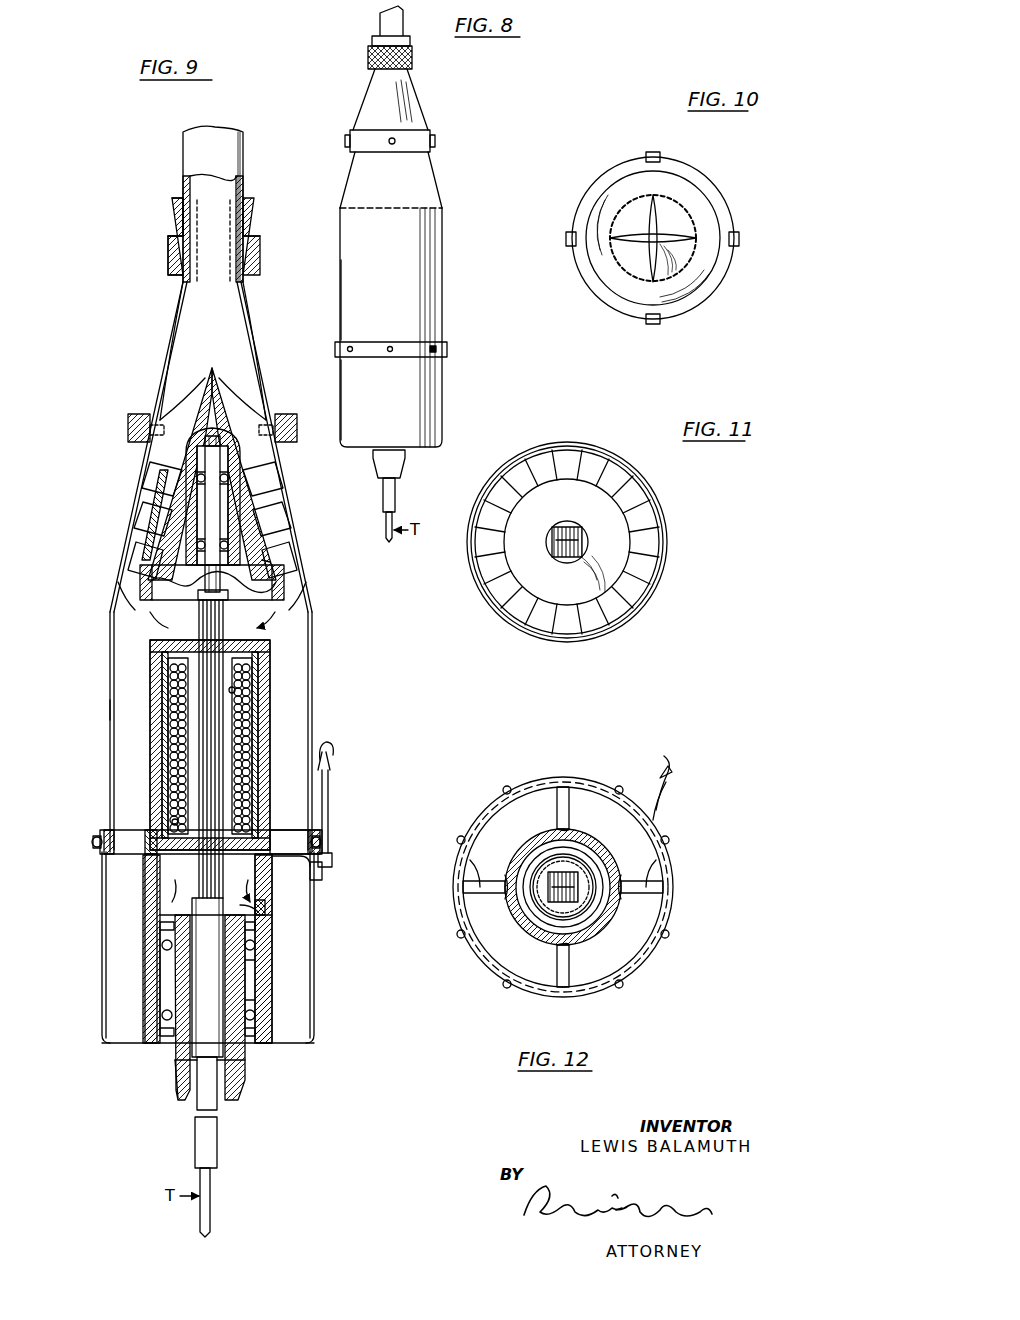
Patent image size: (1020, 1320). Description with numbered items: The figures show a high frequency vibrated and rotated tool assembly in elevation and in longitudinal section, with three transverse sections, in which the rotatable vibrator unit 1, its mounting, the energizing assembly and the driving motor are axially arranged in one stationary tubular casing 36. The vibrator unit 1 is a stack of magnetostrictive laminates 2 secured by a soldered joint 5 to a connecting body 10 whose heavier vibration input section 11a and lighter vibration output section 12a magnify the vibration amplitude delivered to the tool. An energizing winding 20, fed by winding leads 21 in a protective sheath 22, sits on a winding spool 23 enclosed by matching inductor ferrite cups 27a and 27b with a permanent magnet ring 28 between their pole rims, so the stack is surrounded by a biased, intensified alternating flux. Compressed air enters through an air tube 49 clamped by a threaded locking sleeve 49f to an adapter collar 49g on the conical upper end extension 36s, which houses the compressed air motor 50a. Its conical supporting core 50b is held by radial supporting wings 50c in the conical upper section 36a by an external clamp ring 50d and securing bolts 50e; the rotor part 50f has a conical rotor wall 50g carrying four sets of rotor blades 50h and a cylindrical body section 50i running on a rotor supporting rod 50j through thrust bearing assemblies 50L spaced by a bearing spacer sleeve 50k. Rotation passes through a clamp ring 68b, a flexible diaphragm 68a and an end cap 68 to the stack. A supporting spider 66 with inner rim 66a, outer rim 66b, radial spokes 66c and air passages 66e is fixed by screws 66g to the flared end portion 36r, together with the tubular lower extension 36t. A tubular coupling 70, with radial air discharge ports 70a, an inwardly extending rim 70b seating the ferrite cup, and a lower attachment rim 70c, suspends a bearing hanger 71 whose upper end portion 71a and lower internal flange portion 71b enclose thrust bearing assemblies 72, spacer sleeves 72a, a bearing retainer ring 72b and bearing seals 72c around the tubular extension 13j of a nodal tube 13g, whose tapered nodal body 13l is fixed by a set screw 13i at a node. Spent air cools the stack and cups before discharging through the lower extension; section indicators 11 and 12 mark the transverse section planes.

In FIG. 9, the vibrator unit 1 is at (200, 608).
In FIG. 11, the vibrator unit 1 is at (570, 570).
In FIG. 12, the vibrator unit 1 is at (560, 905).
In FIG. 9, the magnetostrictive laminates 2 is at (198, 632).
In FIG. 11, the magnetostrictive laminates 2 is at (560, 560).
In FIG. 12, the magnetostrictive laminates 2 is at (580, 905).
In FIG. 9, the soldered joint 5 is at (192, 900).
In FIG. 9, the connecting body 10 is at (125, 366).
In FIG. 9, the section indicator 11 is at (68, 590).
In FIG. 9, the vibration input section 11a is at (210, 977).
In FIG. 9, the section indicator 12 is at (58, 776).
In FIG. 8, the vibration output section 12a is at (397, 496).
In FIG. 8, the nodal tube 13g is at (405, 470).
In FIG. 9, the nodal tube 13g is at (240, 1100).
In FIG. 9, the set screw 13i is at (245, 1060).
In FIG. 9, the tubular extension 13j is at (176, 970).
In FIG. 9, the tapered nodal body 13l is at (176, 1070).
In FIG. 9, the energizing winding 20 is at (262, 680).
In FIG. 12, the energizing winding 20 is at (598, 868).
In FIG. 9, the winding lead 21 is at (322, 752).
In FIG. 12, the winding lead 21 is at (671, 772).
In FIG. 9, the protective sheath 22 is at (330, 800).
In FIG. 12, the protective sheath 22 is at (660, 800).
In FIG. 9, the winding spool 23 is at (255, 665).
In FIG. 9, the inductor ferrite cup 27a is at (156, 672).
In FIG. 9, the inductor ferrite cup 27b is at (160, 782).
In FIG. 9, the permanent magnet ring 28 is at (165, 745).
In FIG. 12, the permanent magnet ring 28 is at (575, 830).
In FIG. 8, the stationary tubular casing 36 is at (446, 250).
In FIG. 9, the stationary tubular casing 36 is at (108, 690).
In FIG. 8, the conical upper section 36a is at (400, 295).
In FIG. 9, the conical upper section 36a is at (112, 706).
In FIG. 11, the conical upper section 36a is at (668, 532).
In FIG. 12, the conical upper section 36a is at (555, 778).
In FIG. 8, the flared end portion 36r is at (402, 342).
In FIG. 9, the flared end portion 36r is at (96, 838).
In FIG. 12, the flared end portion 36r is at (522, 782).
In FIG. 8, the conical upper end extension 36s is at (418, 112).
In FIG. 9, the conical upper end extension 36s is at (158, 382).
In FIG. 10, the conical upper end extension 36s is at (686, 182).
In FIG. 8, the tubular lower extension 36t is at (432, 405).
In FIG. 9, the tubular lower extension 36t is at (102, 950).
In FIG. 8, the air tube 49 is at (380, 20).
In FIG. 9, the air tube 49 is at (192, 148).
In FIG. 8, the threaded locking sleeve 49f is at (412, 64).
In FIG. 9, the threaded locking sleeve 49f is at (174, 223).
In FIG. 9, the adapter collar 49g is at (170, 243).
In FIG. 9, the compressed air motor 50a is at (232, 345).
In FIG. 10, the compressed air motor 50a is at (690, 205).
In FIG. 9, the conical supporting core 50b is at (222, 382).
In FIG. 10, the conical supporting core 50b is at (645, 220).
In FIG. 8, the radial supporting wings 50c is at (433, 141).
In FIG. 9, the radial supporting wings 50c is at (238, 400).
In FIG. 10, the radial supporting wings 50c is at (620, 236).
In FIG. 8, the external clamp ring 50d is at (430, 155).
In FIG. 9, the external clamp ring 50d is at (135, 440).
In FIG. 10, the external clamp ring 50d is at (630, 168).
In FIG. 9, the securing bolts 50e is at (132, 418).
In FIG. 10, the securing bolts 50e is at (570, 240).
In FIG. 9, the rotor part 50f is at (282, 572).
In FIG. 9, the conical rotor wall 50g is at (242, 470).
In FIG. 9, the rotor blades 50h is at (150, 475).
In FIG. 11, the rotor blades 50h is at (648, 580).
In FIG. 9, the cylindrical body section 50i is at (158, 510).
In FIG. 9, the rotor supporting rod 50j is at (222, 440).
In FIG. 9, the bearing spacer sleeve 50k is at (232, 500).
In FIG. 9, the thrust bearing assemblies 50L is at (195, 478).
In FIG. 9, the supporting spider 66 is at (142, 846).
In FIG. 9, the inner rim 66a is at (150, 856).
In FIG. 12, the inner rim 66a is at (522, 840).
In FIG. 9, the outer rim 66b is at (142, 856).
In FIG. 12, the outer rim 66b is at (495, 795).
In FIG. 12, the radial spokes 66c is at (490, 885).
In FIG. 9, the air passages 66e is at (300, 840).
In FIG. 12, the air passages 66e is at (508, 842).
In FIG. 8, the screws 66g is at (437, 350).
In FIG. 9, the screws 66g is at (322, 842).
In FIG. 12, the screws 66g is at (478, 962).
In FIG. 9, the end cap 68 is at (196, 594).
In FIG. 11, the end cap 68 is at (572, 520).
In FIG. 9, the flexible diaphragm 68a is at (146, 572).
In FIG. 11, the flexible diaphragm 68a is at (600, 512).
In FIG. 9, the clamp ring 68b is at (285, 582).
In FIG. 11, the clamp ring 68b is at (636, 612).
In FIG. 9, the tubular coupling 70 is at (262, 918).
In FIG. 9, the radial air discharge ports 70a is at (265, 878).
In FIG. 9, the inwardly extending rim 70b is at (324, 870).
In FIG. 9, the lower attachment rim 70c is at (268, 903).
In FIG. 9, the bearing hanger 71 is at (275, 968).
In FIG. 9, the upper end portion 71a is at (145, 905).
In FIG. 9, the lower internal flange portion 71b is at (150, 1043).
In FIG. 9, the thrust bearing assemblies 72 is at (256, 948).
In FIG. 9, the spacer sleeves 72a is at (258, 985).
In FIG. 9, the bearing retainer ring 72b is at (268, 940).
In FIG. 9, the bearing seals 72c is at (160, 926).